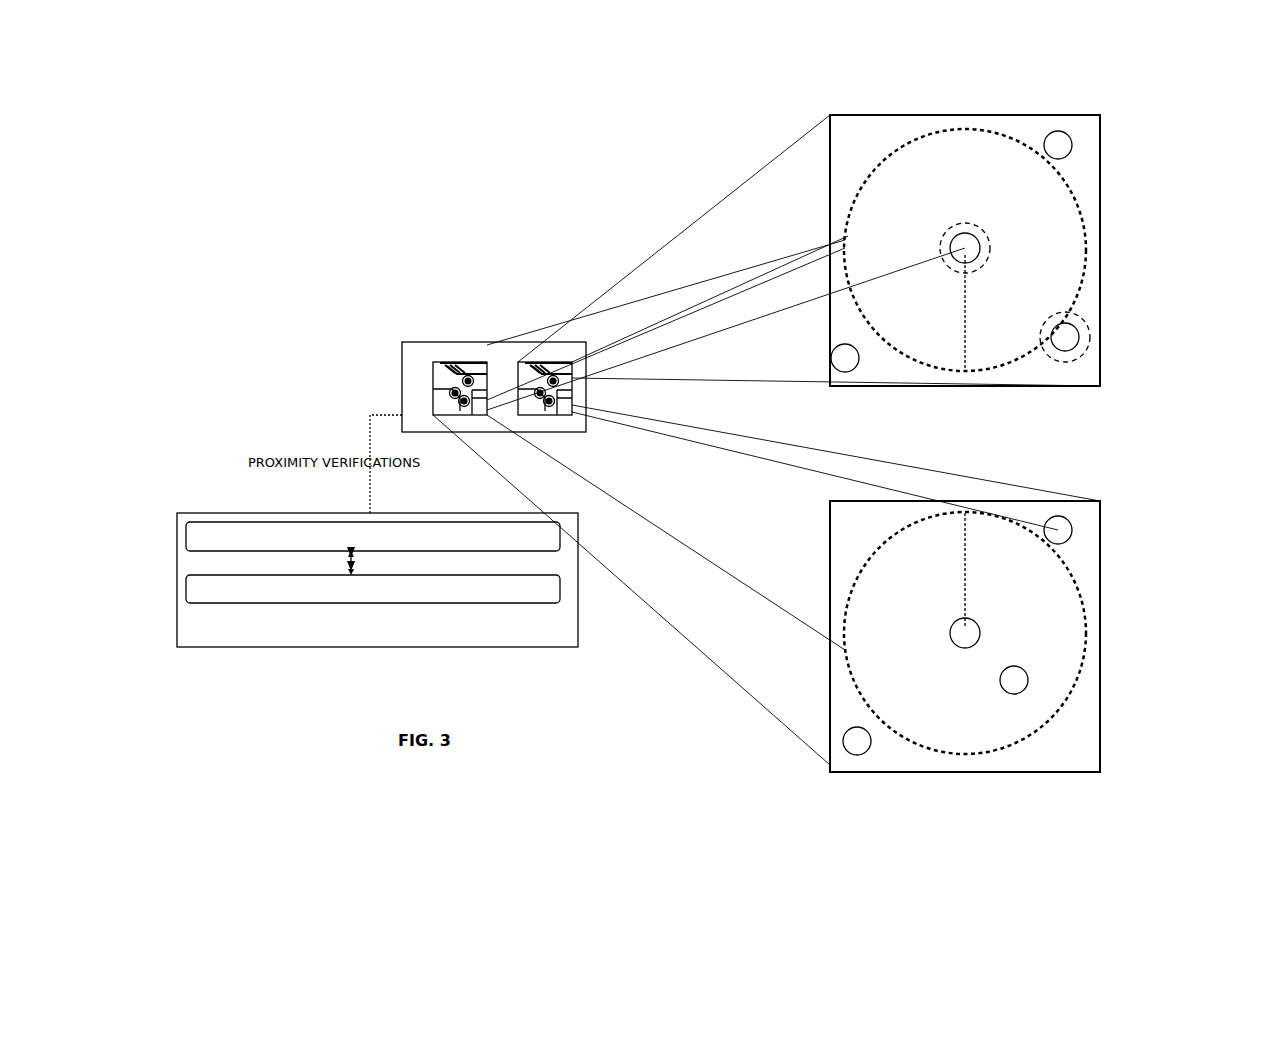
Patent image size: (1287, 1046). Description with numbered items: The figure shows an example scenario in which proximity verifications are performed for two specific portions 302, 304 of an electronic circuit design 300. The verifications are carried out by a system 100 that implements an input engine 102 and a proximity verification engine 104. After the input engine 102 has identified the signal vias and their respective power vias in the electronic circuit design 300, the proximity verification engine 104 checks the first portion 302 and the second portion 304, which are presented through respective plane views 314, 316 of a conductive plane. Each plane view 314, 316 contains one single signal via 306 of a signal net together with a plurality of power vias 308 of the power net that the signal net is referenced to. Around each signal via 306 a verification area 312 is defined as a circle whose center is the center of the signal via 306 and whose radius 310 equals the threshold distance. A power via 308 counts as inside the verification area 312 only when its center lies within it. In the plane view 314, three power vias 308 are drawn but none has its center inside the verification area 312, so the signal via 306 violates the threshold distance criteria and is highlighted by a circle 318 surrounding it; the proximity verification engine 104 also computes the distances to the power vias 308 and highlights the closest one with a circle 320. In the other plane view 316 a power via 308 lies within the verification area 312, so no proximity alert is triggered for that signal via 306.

The system 100 is at (551, 638).
The input engine 102 is at (551, 598).
The proximity verification engine 104 is at (551, 545).
The electronic circuit design 300 is at (432, 342).
The first portion 302 is at (487, 362).
The second portion 304 is at (572, 338).
The signal via 306 is at (746, 198).
The power via 308 is at (706, 364).
The radius 310 is at (968, 300).
The verification area 312 is at (576, 198).
The plane view 314 is at (1000, 115).
The plane view 316 is at (1146, 521).
The circle 318 is at (993, 247).
The circle 320 is at (1092, 340).